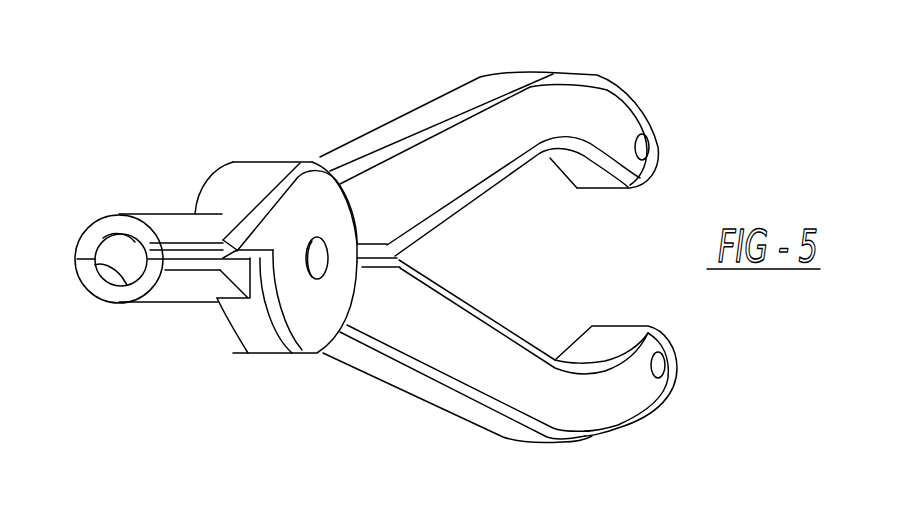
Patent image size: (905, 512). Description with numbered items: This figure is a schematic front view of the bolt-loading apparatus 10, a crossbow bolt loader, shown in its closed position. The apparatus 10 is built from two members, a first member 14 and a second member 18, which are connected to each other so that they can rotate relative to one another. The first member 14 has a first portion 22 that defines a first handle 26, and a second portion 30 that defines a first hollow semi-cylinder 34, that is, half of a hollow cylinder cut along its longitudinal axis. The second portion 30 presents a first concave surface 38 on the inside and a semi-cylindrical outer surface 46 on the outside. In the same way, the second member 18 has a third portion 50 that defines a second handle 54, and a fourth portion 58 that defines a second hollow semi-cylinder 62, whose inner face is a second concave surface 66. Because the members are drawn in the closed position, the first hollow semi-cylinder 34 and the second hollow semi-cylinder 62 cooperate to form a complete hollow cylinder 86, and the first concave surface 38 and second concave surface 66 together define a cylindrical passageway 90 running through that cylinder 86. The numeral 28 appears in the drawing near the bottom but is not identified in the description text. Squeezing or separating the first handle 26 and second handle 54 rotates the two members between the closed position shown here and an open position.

The bolt-loading apparatus 10 is at (308, 98).
The first member 14 is at (376, 251).
The second member 18 is at (473, 261).
The first portion 22 is at (557, 105).
The first handle 26 is at (497, 157).
The lower element 28 is at (210, 505).
The second portion 30 is at (143, 290).
The first hollow semi-cylinder 34 is at (175, 295).
The first concave surface 38 is at (101, 265).
The semi-cylindrical outer surface 46 is at (103, 300).
The third portion 50 is at (500, 383).
The second handle 54 is at (542, 398).
The fourth portion 58 is at (185, 163).
The second hollow semi-cylinder 62 is at (182, 223).
The second concave surface 66 is at (116, 236).
The complete hollow cylinder 86 is at (125, 203).
The cylindrical passageway 90 is at (132, 258).